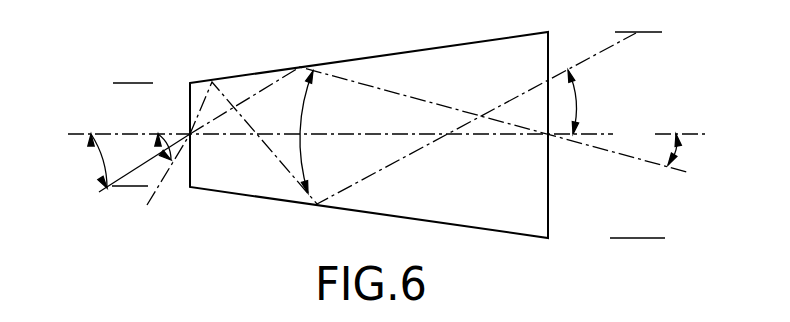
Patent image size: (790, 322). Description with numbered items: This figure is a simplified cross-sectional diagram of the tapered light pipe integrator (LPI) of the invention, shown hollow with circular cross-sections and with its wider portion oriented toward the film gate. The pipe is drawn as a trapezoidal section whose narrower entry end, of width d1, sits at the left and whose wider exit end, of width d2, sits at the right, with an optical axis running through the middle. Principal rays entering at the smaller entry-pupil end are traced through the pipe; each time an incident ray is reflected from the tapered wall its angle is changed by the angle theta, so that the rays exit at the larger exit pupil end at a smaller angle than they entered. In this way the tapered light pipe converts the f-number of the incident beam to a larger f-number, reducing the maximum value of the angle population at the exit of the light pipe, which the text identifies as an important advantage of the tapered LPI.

The entrance end width of light guide d1 is at (135, 84).
The exit end width of light guide d2 is at (638, 237).